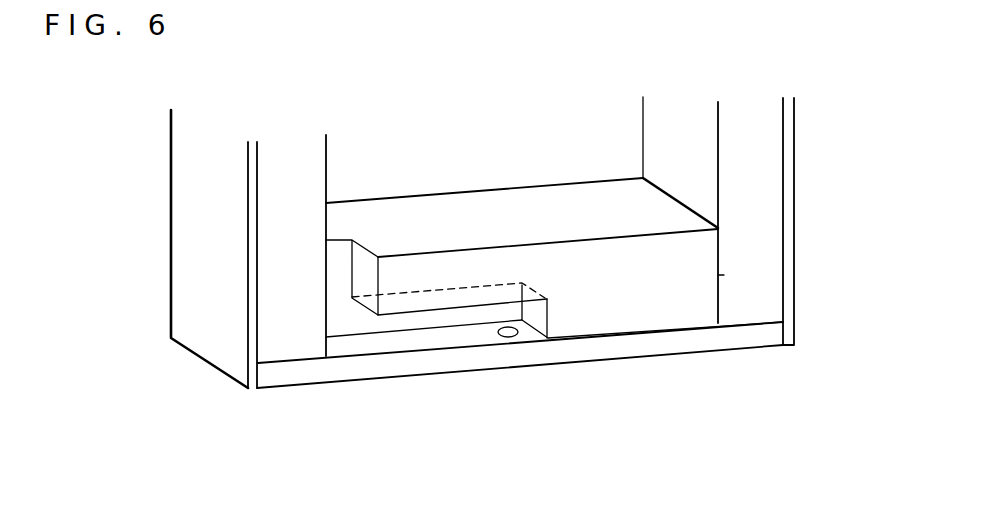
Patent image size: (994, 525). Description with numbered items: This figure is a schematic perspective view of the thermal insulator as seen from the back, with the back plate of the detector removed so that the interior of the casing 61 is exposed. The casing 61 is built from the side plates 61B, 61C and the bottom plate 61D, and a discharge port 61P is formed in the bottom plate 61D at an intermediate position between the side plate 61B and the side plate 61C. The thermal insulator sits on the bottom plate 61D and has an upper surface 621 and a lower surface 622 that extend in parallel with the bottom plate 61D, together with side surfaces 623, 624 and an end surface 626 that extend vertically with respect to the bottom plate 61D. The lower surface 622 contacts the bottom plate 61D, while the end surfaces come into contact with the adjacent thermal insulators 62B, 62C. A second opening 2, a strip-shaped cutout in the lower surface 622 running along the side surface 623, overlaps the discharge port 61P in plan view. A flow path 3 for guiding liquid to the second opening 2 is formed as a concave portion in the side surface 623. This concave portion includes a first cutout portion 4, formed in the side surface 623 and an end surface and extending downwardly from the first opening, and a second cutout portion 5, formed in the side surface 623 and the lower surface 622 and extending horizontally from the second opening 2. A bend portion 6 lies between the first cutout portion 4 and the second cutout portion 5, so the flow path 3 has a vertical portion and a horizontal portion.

The casing 61 is at (168, 189).
The side plate 61B is at (228, 153).
The side plate 61C is at (790, 98).
The bottom plate 61D is at (553, 365).
The discharge port 61P is at (512, 337).
The thermal insulator 62B is at (282, 155).
The thermal insulator 62C is at (755, 103).
The upper surface 621 is at (450, 207).
The lower surface 622 is at (612, 337).
The side surface 623 is at (692, 308).
The side surface 624 is at (552, 198).
The end surface 626 is at (720, 275).
The bend portion 6 is at (332, 332).
The second opening 2 is at (488, 335).
The flow path 3 is at (477, 410).
The first cutout portion 4 is at (340, 297).
The second cutout portion 5 is at (407, 322).